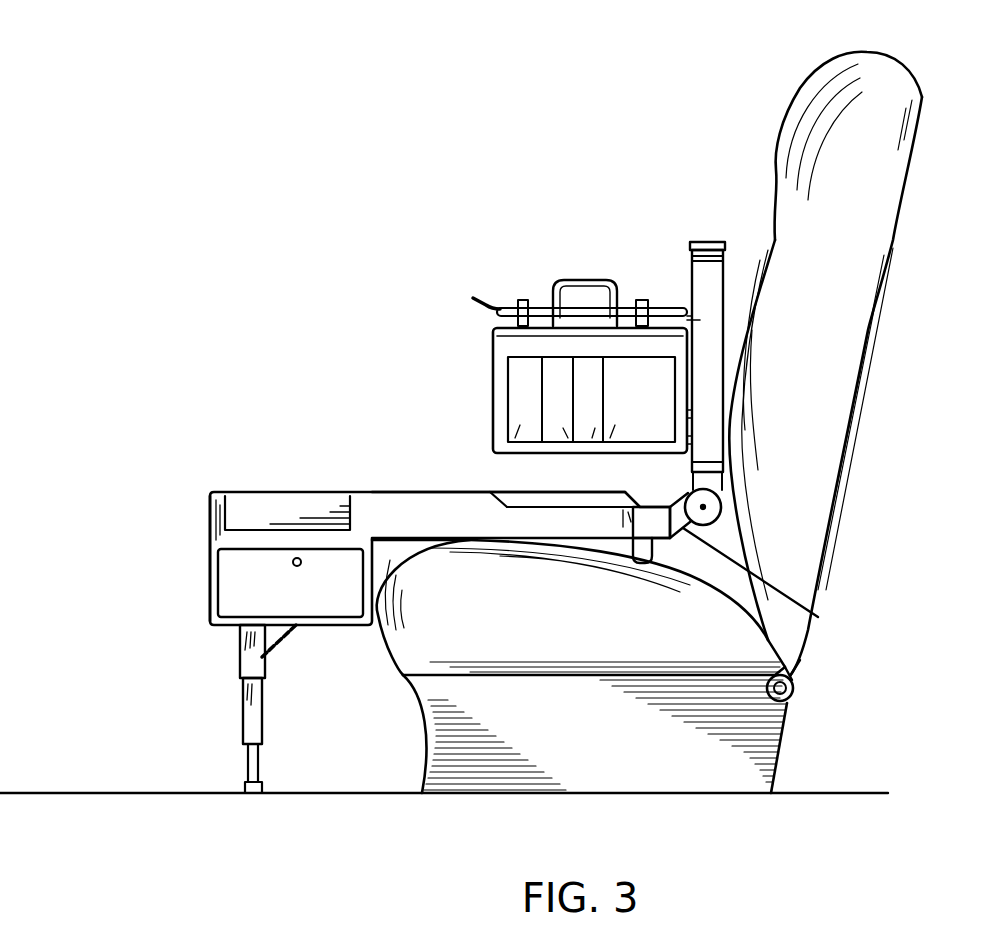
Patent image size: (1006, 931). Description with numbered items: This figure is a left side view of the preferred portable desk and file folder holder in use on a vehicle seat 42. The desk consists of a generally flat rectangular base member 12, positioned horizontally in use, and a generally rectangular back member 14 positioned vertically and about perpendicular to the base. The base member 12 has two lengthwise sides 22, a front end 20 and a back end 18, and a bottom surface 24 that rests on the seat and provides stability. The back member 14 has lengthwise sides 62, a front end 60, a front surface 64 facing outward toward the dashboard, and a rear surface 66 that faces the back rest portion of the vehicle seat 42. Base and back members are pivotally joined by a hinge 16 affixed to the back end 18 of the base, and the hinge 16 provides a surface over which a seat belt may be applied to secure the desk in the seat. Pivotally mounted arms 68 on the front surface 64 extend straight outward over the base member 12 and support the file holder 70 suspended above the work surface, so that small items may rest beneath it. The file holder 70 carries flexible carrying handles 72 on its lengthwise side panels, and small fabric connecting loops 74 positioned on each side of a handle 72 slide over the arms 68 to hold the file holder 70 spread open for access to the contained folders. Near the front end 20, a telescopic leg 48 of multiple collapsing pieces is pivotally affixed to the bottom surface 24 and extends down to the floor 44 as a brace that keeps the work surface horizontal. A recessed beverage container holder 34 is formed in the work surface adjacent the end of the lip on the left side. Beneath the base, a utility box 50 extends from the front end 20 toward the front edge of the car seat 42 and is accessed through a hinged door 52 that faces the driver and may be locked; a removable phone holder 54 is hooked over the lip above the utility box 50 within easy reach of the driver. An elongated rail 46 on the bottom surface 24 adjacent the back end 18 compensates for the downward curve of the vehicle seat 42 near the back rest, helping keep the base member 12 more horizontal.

The base member 12 is at (370, 495).
The back member 14 is at (661, 472).
The hinge 16 is at (721, 506).
The back end 18 is at (776, 590).
The front end 20 is at (210, 520).
The lengthwise side 22 is at (422, 505).
The bottom surface 24 is at (513, 540).
The beverage container holder 34 is at (628, 517).
The vehicle seat 42 is at (457, 632).
The floor 44 is at (97, 792).
The rail 46 is at (645, 563).
The telescopic leg 48 is at (260, 745).
The utility box 50 is at (237, 586).
The hinged door 52 is at (310, 598).
The phone holder 54 is at (277, 507).
The front end 60 is at (705, 242).
The lengthwise side 62 is at (708, 378).
The front surface 64 is at (690, 260).
The rear surface 66 is at (727, 282).
The arm 68 is at (476, 296).
The file folder holder 70 is at (492, 383).
The carrying handle 72 is at (585, 280).
The connecting loop 74 is at (640, 300).